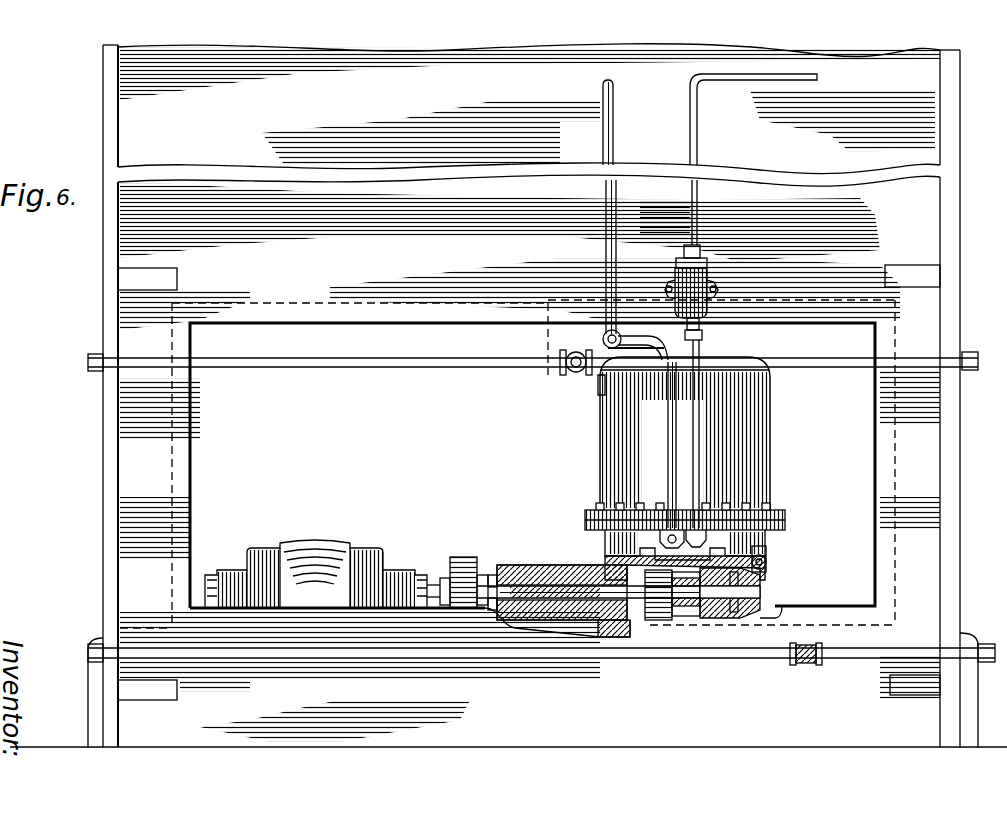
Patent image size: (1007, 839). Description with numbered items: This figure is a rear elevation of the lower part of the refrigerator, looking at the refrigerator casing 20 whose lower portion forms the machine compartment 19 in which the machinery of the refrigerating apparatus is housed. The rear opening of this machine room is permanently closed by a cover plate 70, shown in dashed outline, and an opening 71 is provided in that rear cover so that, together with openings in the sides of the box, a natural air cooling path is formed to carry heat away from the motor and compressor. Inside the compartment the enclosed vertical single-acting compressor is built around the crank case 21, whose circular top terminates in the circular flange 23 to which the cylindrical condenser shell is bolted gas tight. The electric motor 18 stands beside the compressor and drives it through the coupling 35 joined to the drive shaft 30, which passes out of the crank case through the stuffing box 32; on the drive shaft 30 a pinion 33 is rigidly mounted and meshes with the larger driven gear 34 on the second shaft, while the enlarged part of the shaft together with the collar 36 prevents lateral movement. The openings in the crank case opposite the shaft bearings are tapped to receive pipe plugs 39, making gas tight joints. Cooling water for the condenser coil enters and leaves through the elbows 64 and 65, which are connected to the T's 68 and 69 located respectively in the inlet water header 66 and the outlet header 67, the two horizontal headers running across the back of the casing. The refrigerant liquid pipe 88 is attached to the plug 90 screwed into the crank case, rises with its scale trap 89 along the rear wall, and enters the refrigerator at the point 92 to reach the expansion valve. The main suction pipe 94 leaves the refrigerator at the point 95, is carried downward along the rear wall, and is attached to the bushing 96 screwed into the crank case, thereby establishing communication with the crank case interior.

The electric motor 18 is at (318, 540).
The machine compartment 19 is at (532, 465).
The refrigerator casing 20 is at (961, 242).
The crank case 21 is at (598, 560).
The circular flange 23 is at (586, 516).
The drive shaft 30 is at (489, 570).
The stuffing box 32 is at (558, 567).
The pinion 33 is at (656, 602).
The driven gear 34 is at (643, 614).
The coupling 35 is at (462, 557).
The collar 36 is at (698, 610).
The pipe plugs 39 is at (764, 592).
The elbow 64 is at (766, 562).
The elbow 65 is at (624, 340).
The inlet water header 66 is at (450, 662).
The outlet header 67 is at (414, 368).
The T 68 is at (814, 662).
The T 69 is at (576, 374).
The cover plate 70 is at (890, 468).
The opening 71 is at (577, 333).
The liquid pipe 88 is at (706, 199).
The scale trap 89 is at (716, 276).
The plug 90 is at (700, 530).
The point of entry of liquid pipe 92 is at (818, 77).
The main suction pipe 94 is at (598, 225).
The point of exit of suction pipe 95 is at (602, 86).
The bushing 96 is at (660, 528).